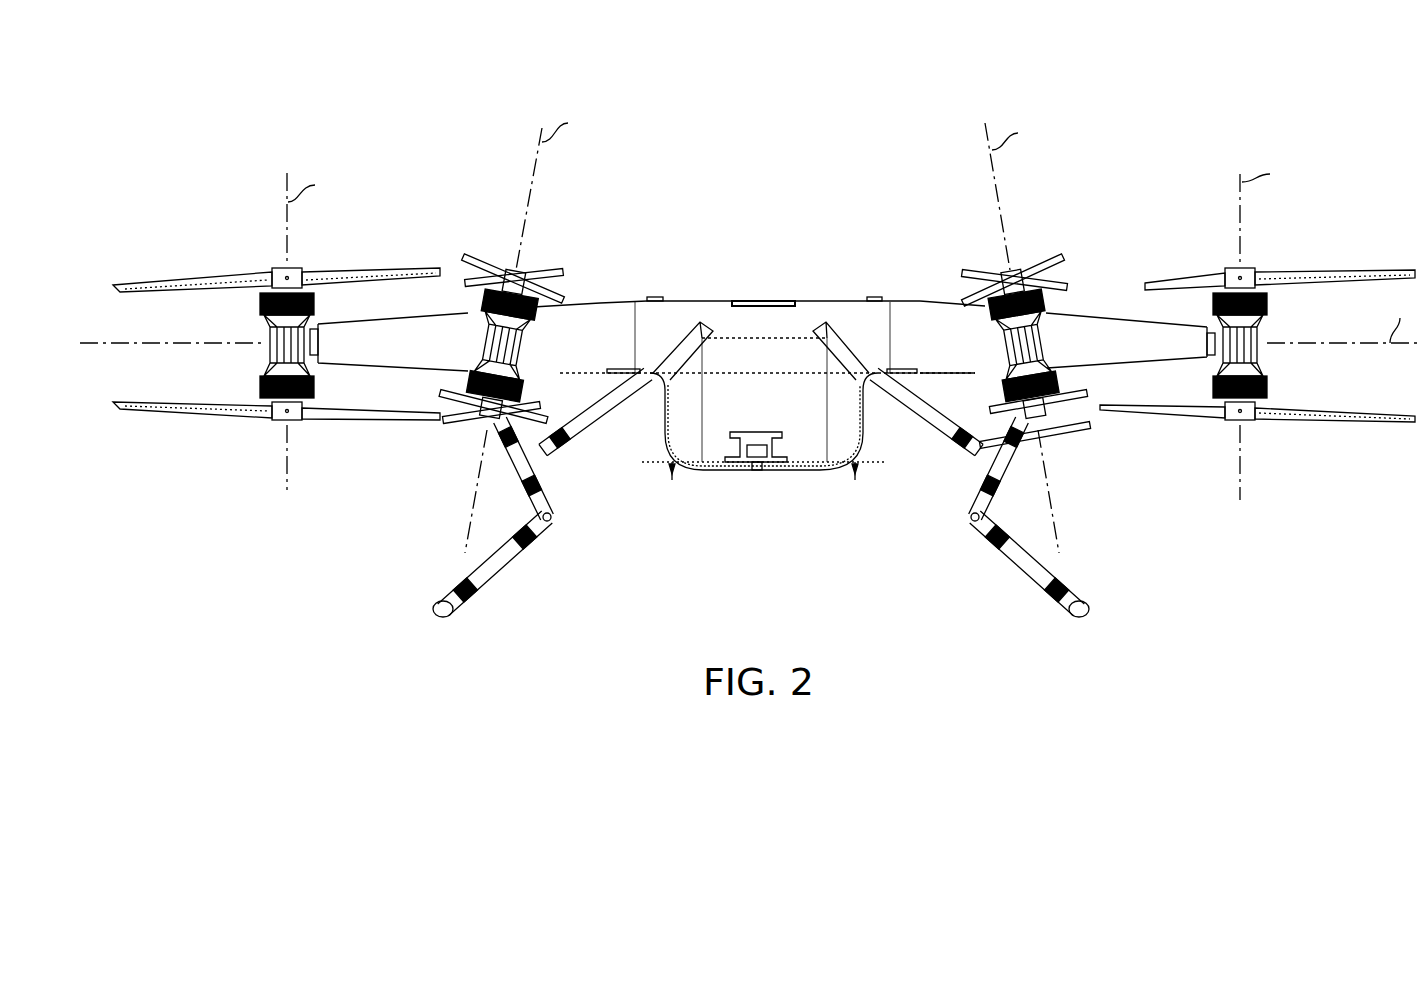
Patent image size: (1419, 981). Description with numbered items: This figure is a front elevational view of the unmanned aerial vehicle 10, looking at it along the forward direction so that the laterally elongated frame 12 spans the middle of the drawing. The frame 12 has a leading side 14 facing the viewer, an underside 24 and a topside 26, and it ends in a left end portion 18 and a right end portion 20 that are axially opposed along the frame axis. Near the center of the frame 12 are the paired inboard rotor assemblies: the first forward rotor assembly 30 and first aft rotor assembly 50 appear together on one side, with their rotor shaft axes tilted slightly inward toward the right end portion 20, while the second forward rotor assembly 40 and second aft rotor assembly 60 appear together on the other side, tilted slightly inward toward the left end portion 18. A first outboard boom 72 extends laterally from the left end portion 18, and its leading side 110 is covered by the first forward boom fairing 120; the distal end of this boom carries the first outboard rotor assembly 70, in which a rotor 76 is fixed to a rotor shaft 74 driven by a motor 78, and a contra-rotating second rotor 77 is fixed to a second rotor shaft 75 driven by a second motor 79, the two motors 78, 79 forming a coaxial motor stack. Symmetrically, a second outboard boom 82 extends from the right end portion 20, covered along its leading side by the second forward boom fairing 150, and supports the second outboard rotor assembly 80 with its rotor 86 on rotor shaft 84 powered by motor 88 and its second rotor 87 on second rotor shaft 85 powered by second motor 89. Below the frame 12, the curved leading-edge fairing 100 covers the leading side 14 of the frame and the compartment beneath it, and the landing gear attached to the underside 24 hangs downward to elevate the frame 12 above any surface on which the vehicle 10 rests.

The unmanned aerial vehicle 10 is at (1227, 139).
The frame 12 is at (753, 302).
The leading side 14 is at (648, 480).
The left end portion 18 is at (583, 280).
The right end portion 20 is at (759, 300).
The underside 24 is at (952, 373).
The topside 26 is at (917, 302).
The first forward rotor assembly 30 is at (1058, 302).
The second forward rotor assembly 40 is at (494, 289).
The first aft rotor assembly 50 is at (1073, 255).
The second aft rotor assembly 60 is at (510, 247).
The first outboard rotor assembly 70 is at (1327, 240).
The first outboard boom 72 is at (1150, 327).
The rotor shaft 74 is at (1248, 270).
The second rotor shaft 75 is at (1248, 420).
The rotor 76 is at (1368, 270).
The second rotor 77 is at (1364, 420).
The motor 78 is at (1267, 303).
The second motor 79 is at (1267, 382).
The second outboard rotor assembly 80 is at (213, 237).
The second outboard boom 82 is at (402, 333).
The rotor shaft 84 is at (275, 272).
The second rotor shaft 85 is at (277, 420).
The rotor 86 is at (135, 282).
The second rotor 87 is at (170, 412).
The motor 88 is at (257, 302).
The second motor 89 is at (257, 388).
The curved leading-edge fairing 100 is at (803, 452).
The leading side 110 is at (1173, 358).
The first forward boom fairing 120 is at (1093, 320).
The second forward boom fairing 150 is at (438, 370).